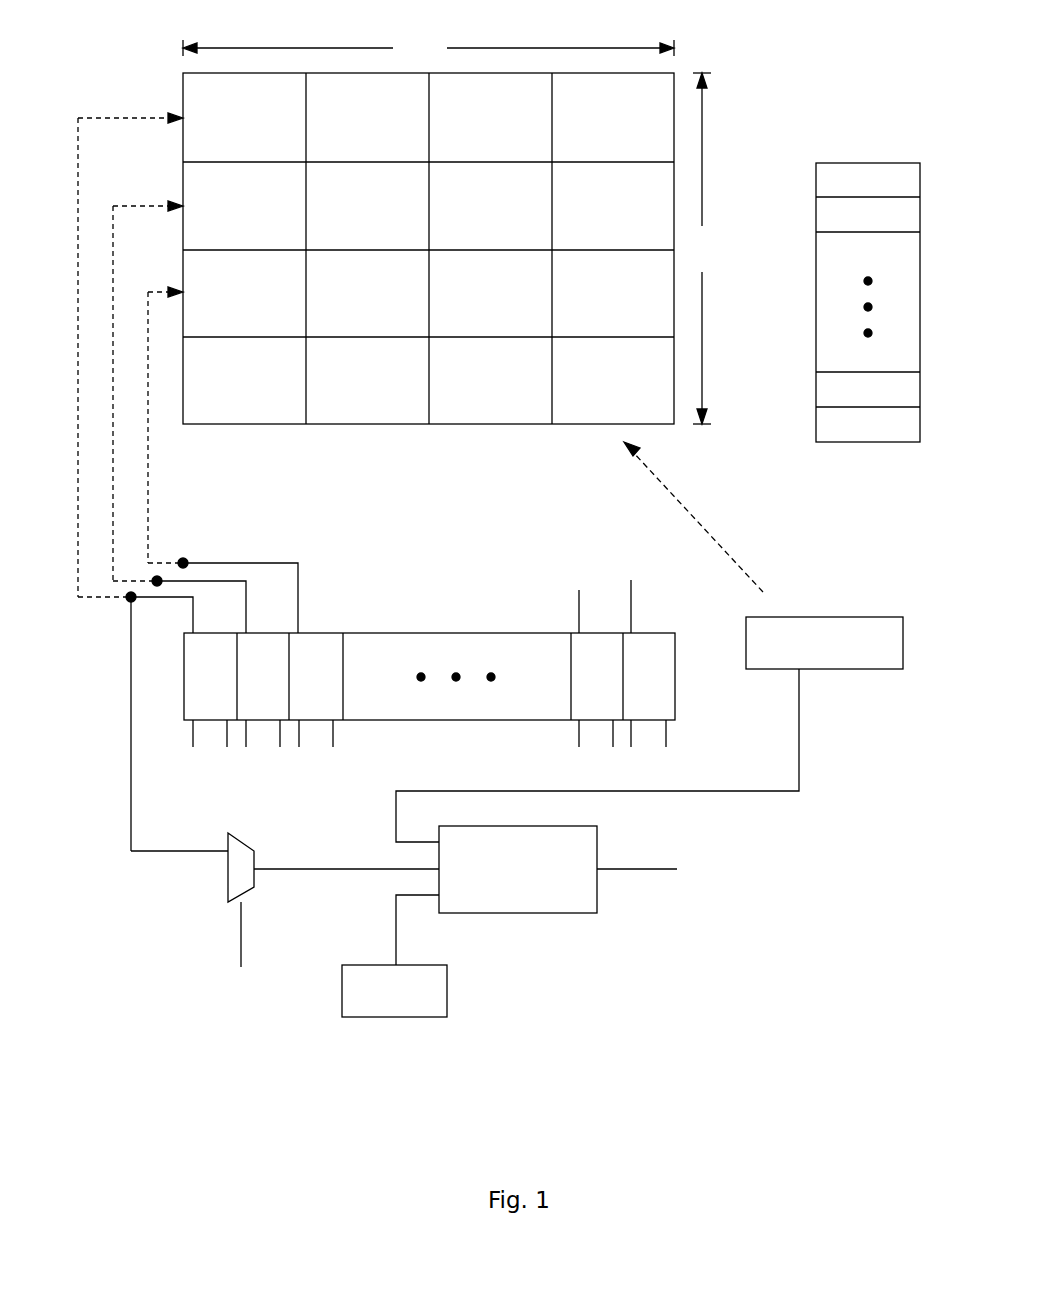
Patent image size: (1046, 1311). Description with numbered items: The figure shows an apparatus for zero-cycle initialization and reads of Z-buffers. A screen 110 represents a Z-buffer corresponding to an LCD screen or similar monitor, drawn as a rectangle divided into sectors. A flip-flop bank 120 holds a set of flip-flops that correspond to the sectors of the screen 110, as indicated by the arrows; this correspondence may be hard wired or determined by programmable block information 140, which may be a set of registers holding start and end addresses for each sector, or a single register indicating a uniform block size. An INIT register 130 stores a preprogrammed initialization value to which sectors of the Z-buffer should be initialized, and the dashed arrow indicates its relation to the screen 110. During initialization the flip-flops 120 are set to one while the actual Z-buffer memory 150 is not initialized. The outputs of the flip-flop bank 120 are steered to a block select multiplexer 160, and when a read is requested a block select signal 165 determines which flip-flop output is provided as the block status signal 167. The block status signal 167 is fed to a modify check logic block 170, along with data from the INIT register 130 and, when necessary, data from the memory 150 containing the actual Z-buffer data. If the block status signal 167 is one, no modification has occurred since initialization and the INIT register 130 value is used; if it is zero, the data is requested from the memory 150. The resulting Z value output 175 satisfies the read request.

The screen 110 is at (674, 424).
The flip-flop bank 120 is at (466, 632).
The INIT register 130 is at (862, 617).
The block information 140 is at (893, 442).
The memory 150 is at (447, 993).
The block select multiplexer 160 is at (241, 841).
The block select signal 165 is at (241, 912).
The block status signal 167 is at (306, 869).
The modify check logic block 170 is at (570, 913).
The Z value output 175 is at (624, 869).